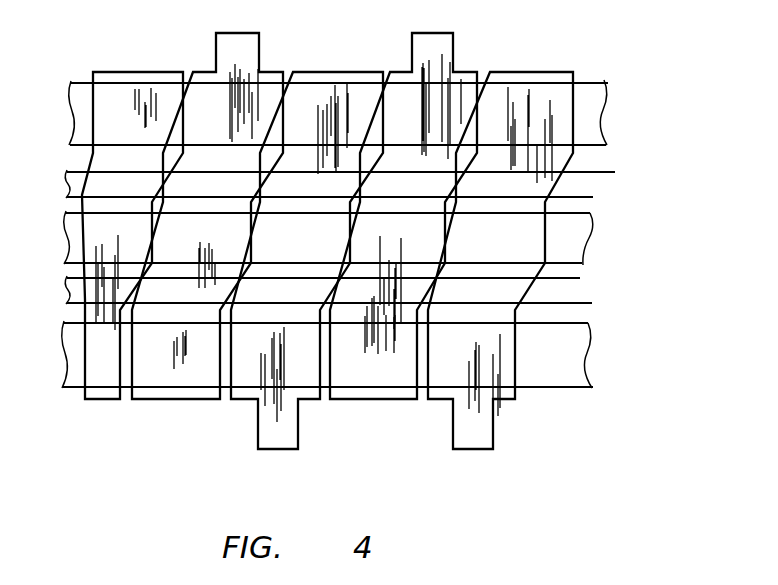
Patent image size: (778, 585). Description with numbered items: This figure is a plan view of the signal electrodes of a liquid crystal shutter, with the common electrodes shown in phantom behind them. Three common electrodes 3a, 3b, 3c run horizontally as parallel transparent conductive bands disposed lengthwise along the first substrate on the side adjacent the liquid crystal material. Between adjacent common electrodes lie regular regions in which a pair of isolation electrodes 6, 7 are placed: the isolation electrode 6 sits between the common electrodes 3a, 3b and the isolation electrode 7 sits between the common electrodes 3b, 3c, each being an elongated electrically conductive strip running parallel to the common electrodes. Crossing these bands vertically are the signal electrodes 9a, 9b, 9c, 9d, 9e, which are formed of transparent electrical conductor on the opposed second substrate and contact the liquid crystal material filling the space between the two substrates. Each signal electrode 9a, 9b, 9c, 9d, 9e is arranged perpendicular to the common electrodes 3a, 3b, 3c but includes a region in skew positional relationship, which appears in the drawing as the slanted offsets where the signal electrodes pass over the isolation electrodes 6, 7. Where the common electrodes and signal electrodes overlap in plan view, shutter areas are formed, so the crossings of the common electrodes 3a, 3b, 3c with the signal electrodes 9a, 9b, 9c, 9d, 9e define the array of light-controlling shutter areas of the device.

The common electrode 3a is at (607, 110).
The common electrode 3b is at (588, 233).
The common electrode 3c is at (567, 347).
The isolation electrode 6 is at (592, 178).
The isolation electrode 7 is at (573, 285).
The signal electrode 9a is at (542, 68).
The signal electrode 9b is at (370, 390).
The signal electrode 9c is at (352, 70).
The signal electrode 9d is at (173, 400).
The signal electrode 9e is at (147, 73).